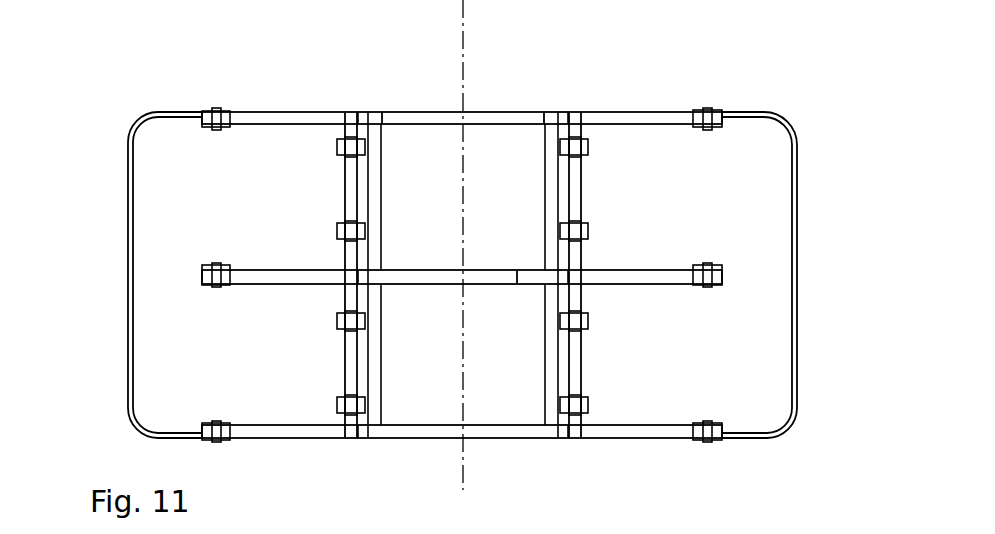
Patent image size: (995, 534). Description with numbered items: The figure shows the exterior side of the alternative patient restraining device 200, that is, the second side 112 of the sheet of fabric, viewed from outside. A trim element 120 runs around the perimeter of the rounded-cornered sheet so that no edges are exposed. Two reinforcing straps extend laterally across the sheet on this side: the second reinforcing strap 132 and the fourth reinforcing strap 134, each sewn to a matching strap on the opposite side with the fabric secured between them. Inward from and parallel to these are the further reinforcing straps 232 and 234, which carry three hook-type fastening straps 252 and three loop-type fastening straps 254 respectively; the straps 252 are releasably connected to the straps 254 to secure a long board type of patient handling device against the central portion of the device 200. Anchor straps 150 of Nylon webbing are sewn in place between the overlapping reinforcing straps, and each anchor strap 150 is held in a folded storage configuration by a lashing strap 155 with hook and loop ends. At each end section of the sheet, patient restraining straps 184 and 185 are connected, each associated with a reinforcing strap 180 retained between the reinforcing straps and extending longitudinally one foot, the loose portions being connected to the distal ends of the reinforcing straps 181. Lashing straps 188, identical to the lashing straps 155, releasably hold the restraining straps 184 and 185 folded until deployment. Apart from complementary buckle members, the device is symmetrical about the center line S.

The center line S is at (463, 97).
The second side 112 is at (772, 255).
The trim element 120 is at (787, 426).
The second reinforcing strap 132 is at (352, 112).
The fourth reinforcing strap 134 is at (573, 130).
The anchor strap 150 is at (562, 406).
The lashing strap 155 is at (573, 438).
The reinforcing strap 180 is at (386, 18).
The reinforcing strap 181 is at (282, 275).
The patient restraining strap 184 is at (207, 277).
The patient restraining strap 185 is at (720, 267).
The lashing strap 188 is at (160, 116).
The patient restraining device 200 is at (108, 252).
The reinforcing strap 232 is at (375, 187).
The reinforcing strap 234 is at (548, 300).
The hook-type fastening strap 252 is at (420, 118).
The loop-type fastening strap 254 is at (533, 118).